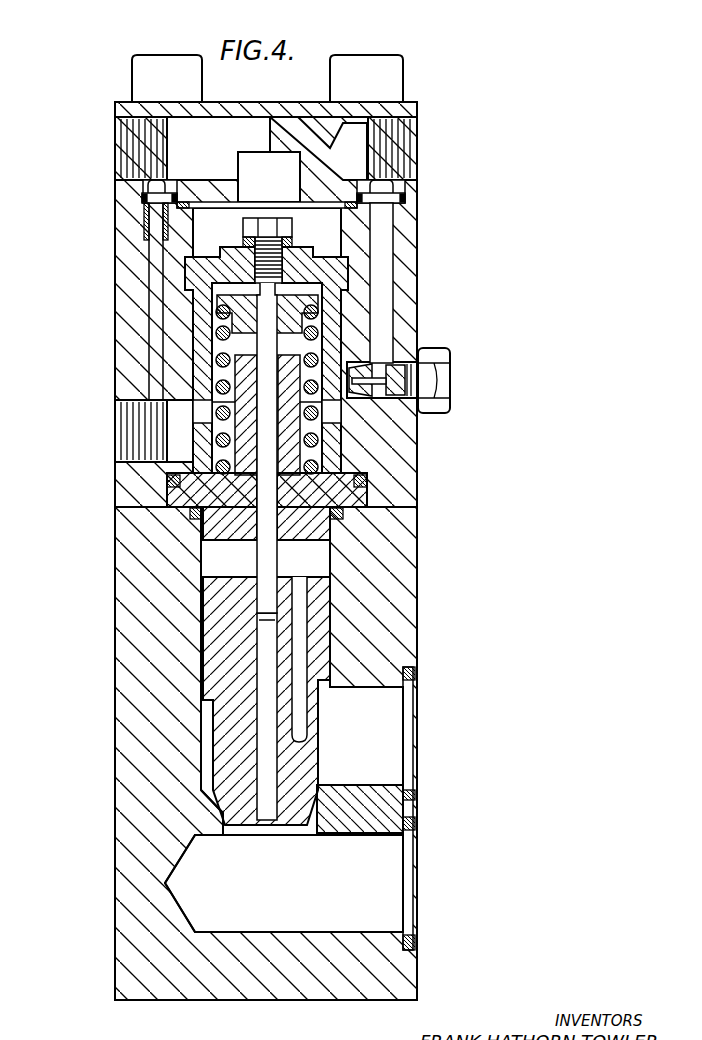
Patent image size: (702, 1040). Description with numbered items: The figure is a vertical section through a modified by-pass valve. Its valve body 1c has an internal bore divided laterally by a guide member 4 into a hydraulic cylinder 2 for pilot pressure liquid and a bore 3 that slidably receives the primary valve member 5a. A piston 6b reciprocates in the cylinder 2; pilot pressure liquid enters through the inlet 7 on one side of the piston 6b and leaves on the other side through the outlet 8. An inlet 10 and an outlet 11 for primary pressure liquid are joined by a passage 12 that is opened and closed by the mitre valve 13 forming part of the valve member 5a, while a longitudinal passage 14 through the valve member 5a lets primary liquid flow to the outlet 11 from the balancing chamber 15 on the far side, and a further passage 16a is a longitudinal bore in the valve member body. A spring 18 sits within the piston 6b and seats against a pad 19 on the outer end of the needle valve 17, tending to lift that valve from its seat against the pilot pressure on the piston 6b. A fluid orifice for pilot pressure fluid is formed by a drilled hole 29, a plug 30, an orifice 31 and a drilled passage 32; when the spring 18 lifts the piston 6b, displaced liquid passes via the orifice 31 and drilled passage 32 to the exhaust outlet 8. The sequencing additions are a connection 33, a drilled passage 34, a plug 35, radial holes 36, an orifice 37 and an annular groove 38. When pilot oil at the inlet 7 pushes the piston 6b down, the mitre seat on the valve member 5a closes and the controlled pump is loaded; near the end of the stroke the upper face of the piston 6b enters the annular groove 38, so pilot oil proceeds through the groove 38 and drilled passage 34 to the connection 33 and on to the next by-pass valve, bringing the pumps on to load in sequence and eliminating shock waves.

The valve body 1c is at (117, 630).
The hydraulic cylinder 2 is at (330, 240).
The bore 3 is at (335, 547).
The guide member 4 is at (185, 497).
The valve member 5a is at (207, 667).
The piston 6b is at (232, 330).
The inlet 7 is at (117, 150).
The outlet 8 is at (117, 432).
The inlet 10 is at (387, 730).
The outlet 11 is at (380, 887).
The passage 12 is at (305, 843).
The mitre valve 13 is at (200, 806).
The longitudinal passage 14 is at (267, 663).
The balancing chamber 15 is at (213, 563).
The passage 16a is at (300, 610).
The needle valve 17 is at (260, 555).
The spring 18 is at (215, 360).
The pad 19 is at (320, 298).
The drilled hole 29 is at (150, 185).
The plug 30 is at (145, 207).
The orifice 31 is at (150, 233).
The drilled passage 32 is at (153, 382).
The connection 33 is at (418, 147).
The drilled passage 34 is at (387, 220).
The plug 35 is at (447, 387).
The radial holes 36 is at (423, 350).
The orifice 37 is at (423, 417).
The annular groove 38 is at (190, 280).